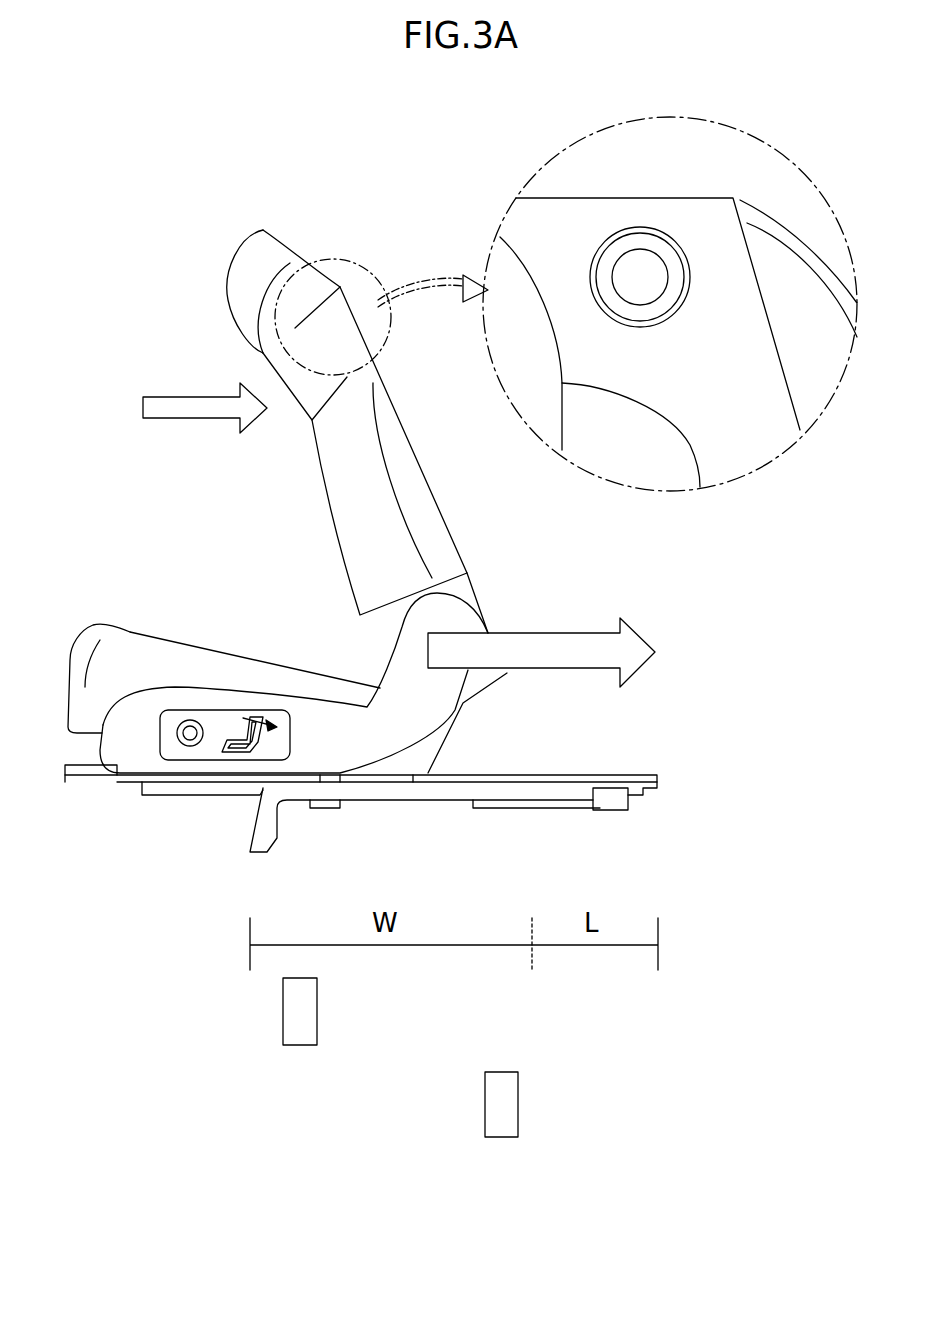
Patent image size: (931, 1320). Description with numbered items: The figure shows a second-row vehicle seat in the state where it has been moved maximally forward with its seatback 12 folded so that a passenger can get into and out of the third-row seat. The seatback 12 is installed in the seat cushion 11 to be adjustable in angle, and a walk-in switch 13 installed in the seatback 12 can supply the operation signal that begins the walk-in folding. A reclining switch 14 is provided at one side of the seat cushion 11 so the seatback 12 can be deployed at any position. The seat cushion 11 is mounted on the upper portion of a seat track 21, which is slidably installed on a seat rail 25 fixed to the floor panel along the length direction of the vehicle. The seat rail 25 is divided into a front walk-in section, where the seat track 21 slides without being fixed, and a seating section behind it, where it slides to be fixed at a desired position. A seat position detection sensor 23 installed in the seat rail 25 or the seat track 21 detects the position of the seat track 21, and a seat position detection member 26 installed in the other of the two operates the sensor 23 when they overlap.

The seat cushion 11 is at (162, 653).
The seatback 12 is at (397, 457).
The walk-in switch 13 is at (630, 260).
The reclining switch 14 is at (250, 713).
The seat track 21 is at (157, 780).
The seat position detection sensor 23 is at (303, 1003).
The seat rail 25 is at (440, 793).
The seat position detection member 26 is at (510, 1100).